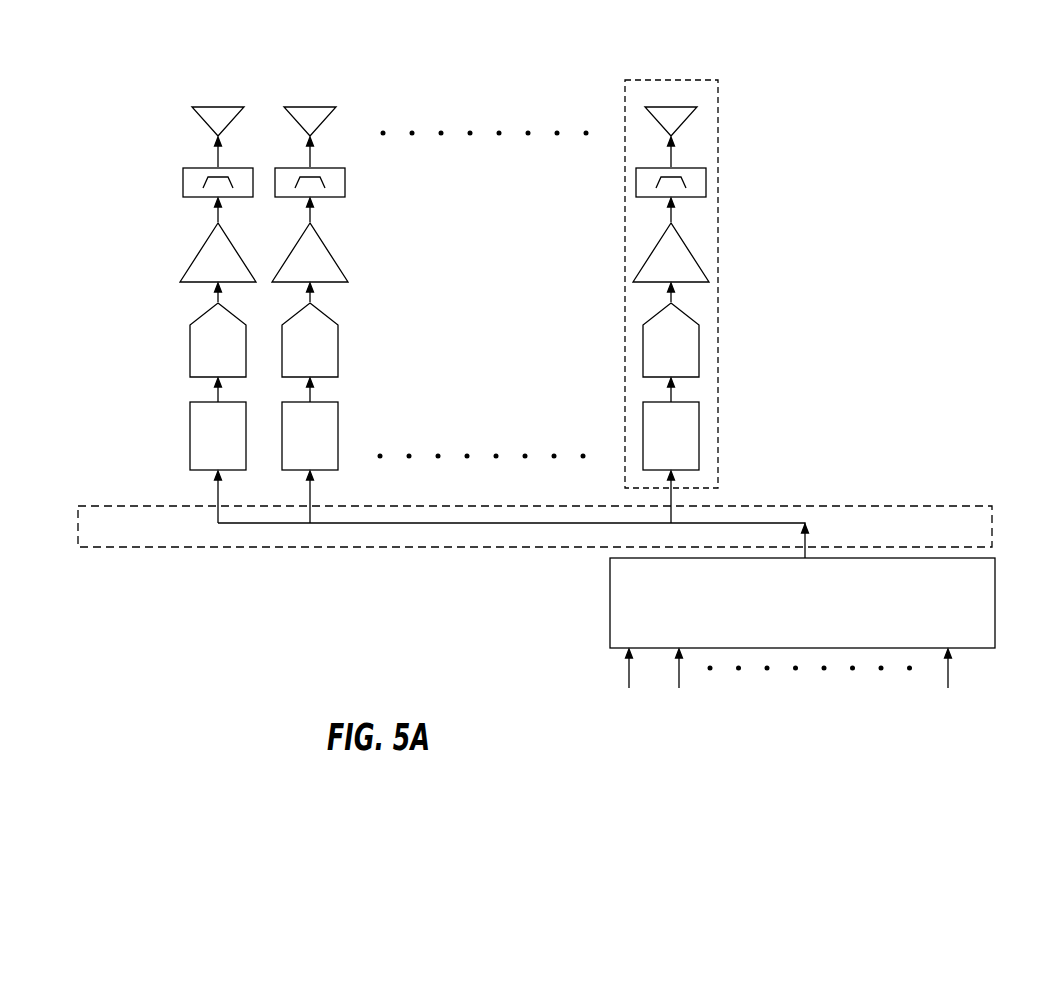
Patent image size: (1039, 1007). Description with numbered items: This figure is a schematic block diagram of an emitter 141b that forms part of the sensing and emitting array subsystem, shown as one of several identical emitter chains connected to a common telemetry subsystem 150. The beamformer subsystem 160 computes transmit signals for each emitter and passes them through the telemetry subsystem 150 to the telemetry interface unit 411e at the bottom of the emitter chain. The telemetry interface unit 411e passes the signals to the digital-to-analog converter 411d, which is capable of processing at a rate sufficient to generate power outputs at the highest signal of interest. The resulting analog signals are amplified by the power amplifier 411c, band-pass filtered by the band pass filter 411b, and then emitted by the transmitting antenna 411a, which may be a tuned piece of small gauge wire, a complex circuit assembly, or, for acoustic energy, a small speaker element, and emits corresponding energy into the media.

The emitter 141b is at (713, 76).
The transmitting antenna 411a is at (687, 120).
The band pass filter 411b is at (706, 183).
The power amplifier 411c is at (686, 242).
The digital-to-analog converter 411d is at (700, 330).
The telemetry interface unit 411e is at (700, 420).
The telemetry subsystem 150 is at (437, 547).
The beamformer subsystem 160 is at (610, 585).